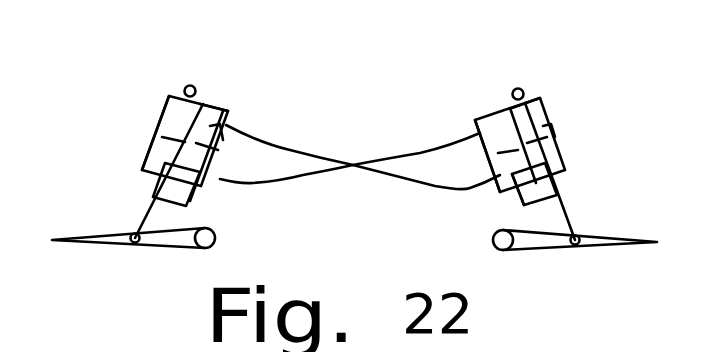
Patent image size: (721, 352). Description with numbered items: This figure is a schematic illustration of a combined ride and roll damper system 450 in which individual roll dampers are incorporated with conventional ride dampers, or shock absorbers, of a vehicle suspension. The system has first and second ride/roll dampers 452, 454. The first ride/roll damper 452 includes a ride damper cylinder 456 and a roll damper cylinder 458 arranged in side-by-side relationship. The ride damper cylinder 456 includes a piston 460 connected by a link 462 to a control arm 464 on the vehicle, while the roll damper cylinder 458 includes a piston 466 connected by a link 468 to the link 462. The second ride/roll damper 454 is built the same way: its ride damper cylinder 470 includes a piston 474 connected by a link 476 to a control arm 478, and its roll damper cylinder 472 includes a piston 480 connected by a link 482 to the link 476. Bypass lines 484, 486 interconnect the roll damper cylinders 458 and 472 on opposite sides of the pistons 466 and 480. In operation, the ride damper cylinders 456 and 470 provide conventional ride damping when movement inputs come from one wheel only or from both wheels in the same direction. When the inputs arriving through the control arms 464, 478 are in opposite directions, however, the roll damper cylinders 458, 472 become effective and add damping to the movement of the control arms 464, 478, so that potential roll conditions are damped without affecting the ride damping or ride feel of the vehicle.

The combined ride and roll damper system 450 is at (146, 88).
The first ride/roll damper 452 is at (229, 74).
The second ride/roll damper 454 is at (515, 70).
The ride damper cylinder 456 is at (166, 104).
The roll damper cylinder 458 is at (222, 108).
The piston 460 is at (168, 131).
The link 462 is at (140, 213).
The control arm 464 is at (108, 243).
The piston 466 is at (226, 126).
The link 468 is at (200, 204).
The ride damper cylinder 470 is at (546, 100).
The roll damper cylinder 472 is at (490, 112).
The piston 474 is at (550, 123).
The link 476 is at (572, 205).
The control arm 478 is at (543, 247).
The piston 480 is at (500, 185).
The link 482 is at (505, 193).
The bypass line 484 is at (310, 153).
The bypass line 486 is at (302, 177).